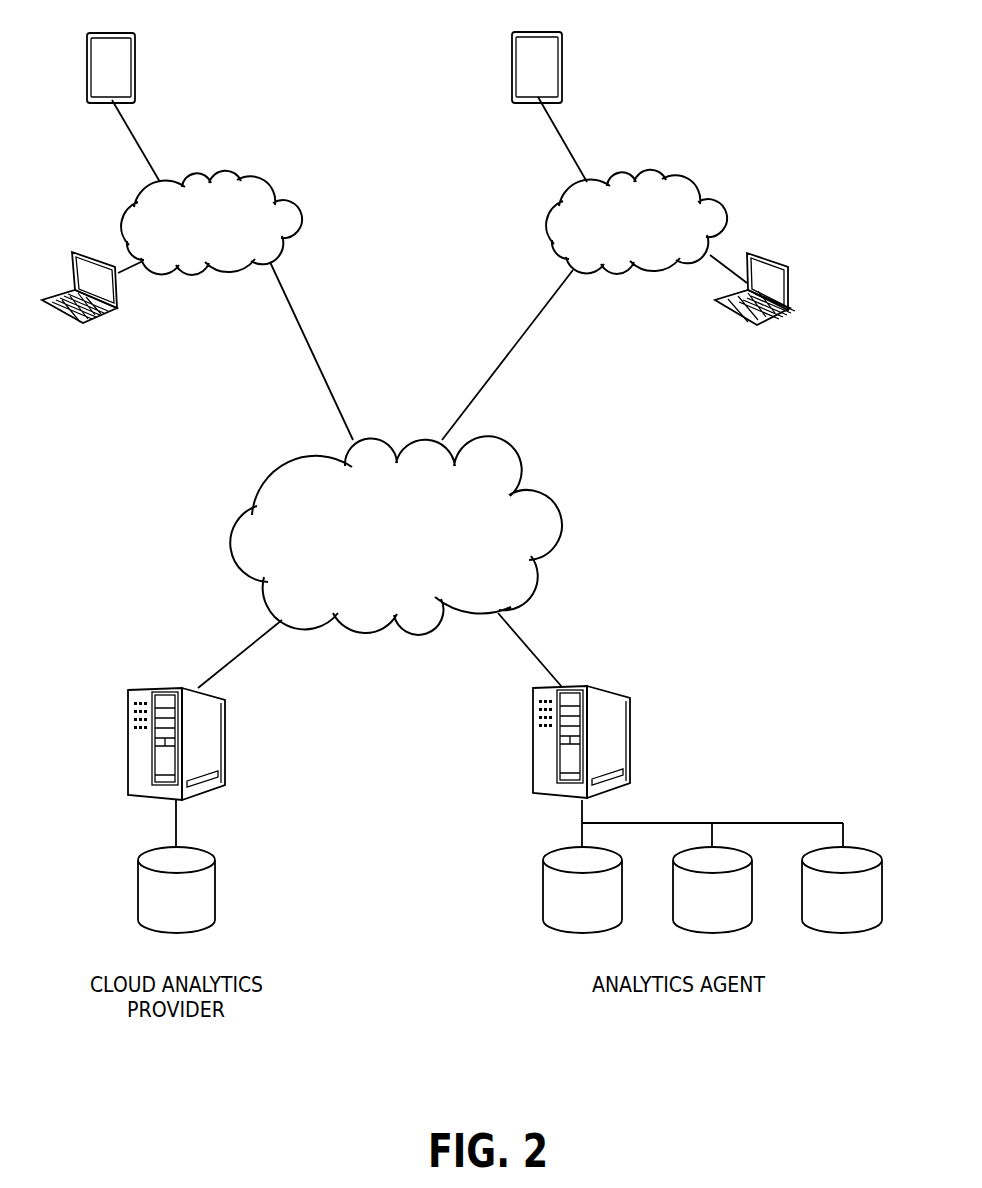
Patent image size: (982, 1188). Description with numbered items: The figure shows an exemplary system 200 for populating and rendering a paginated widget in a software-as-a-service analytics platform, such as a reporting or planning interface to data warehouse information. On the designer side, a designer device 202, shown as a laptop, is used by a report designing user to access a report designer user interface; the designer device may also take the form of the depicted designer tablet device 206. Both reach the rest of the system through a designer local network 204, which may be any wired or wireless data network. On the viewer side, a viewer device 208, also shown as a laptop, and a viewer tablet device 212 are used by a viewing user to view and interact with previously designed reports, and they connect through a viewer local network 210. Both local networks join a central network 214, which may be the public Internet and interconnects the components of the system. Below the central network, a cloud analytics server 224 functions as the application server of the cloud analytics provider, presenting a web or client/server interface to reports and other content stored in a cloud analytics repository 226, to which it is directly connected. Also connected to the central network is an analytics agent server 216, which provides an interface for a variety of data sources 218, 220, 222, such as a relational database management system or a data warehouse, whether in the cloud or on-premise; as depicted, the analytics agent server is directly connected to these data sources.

The system 200 is at (697, 49).
The designer device 202 is at (90, 253).
The designer local network 204 is at (266, 181).
The designer tablet device 206 is at (130, 33).
The viewer device 208 is at (755, 253).
The viewer local network 210 is at (692, 181).
The viewer tablet device 212 is at (550, 32).
The network 214 is at (500, 445).
The analytics agent server 216 is at (532, 738).
The data source 218 is at (543, 893).
The data source 220 is at (673, 893).
The data source 222 is at (802, 893).
The cloud analytics server 224 is at (125, 755).
The cloud analytics repository 226 is at (138, 890).